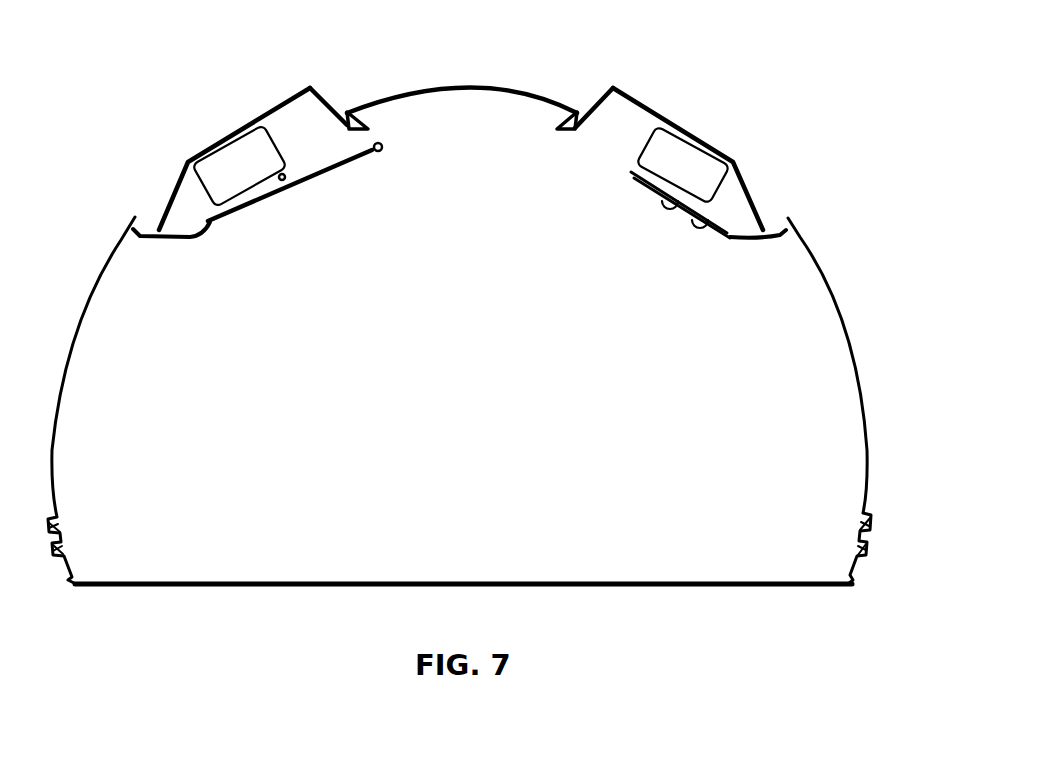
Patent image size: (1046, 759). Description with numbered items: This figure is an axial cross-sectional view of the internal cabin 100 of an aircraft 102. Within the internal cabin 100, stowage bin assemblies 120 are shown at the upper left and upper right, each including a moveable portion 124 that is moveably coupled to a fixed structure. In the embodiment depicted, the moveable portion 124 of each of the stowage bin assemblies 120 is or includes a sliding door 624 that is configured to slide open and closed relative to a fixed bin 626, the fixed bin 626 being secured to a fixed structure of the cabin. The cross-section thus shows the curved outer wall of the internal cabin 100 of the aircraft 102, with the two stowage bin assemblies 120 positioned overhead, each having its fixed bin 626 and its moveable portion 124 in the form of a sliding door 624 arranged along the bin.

The internal cabin 100 is at (850, 267).
The aircraft 102 is at (812, 153).
The stowage bin assembly 120 is at (225, 233).
The moveable portion 124 is at (323, 167).
The sliding door 624 is at (357, 155).
The fixed bin 626 is at (260, 190).